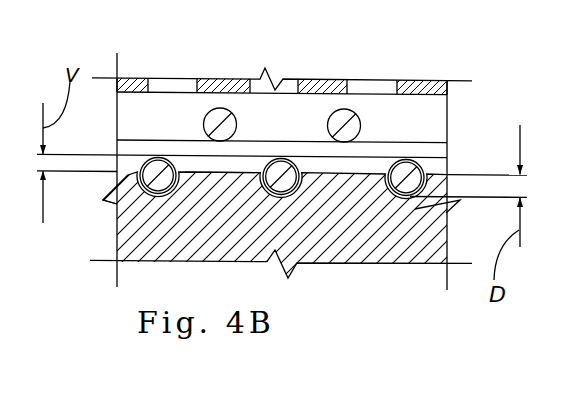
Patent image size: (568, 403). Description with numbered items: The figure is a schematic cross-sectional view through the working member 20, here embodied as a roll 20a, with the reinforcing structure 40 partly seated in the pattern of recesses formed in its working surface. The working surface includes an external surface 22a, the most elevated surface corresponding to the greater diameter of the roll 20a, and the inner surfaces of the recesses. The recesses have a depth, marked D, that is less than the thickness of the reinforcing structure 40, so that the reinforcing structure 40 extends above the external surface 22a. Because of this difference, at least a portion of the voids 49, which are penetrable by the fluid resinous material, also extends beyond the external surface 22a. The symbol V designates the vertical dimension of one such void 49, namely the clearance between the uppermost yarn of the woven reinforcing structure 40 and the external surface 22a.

The working member 20 is at (402, 252).
The roll 20a is at (168, 237).
The external surface 22a is at (197, 172).
The reinforcing structure 40 is at (364, 126).
The voids 49 is at (317, 167).